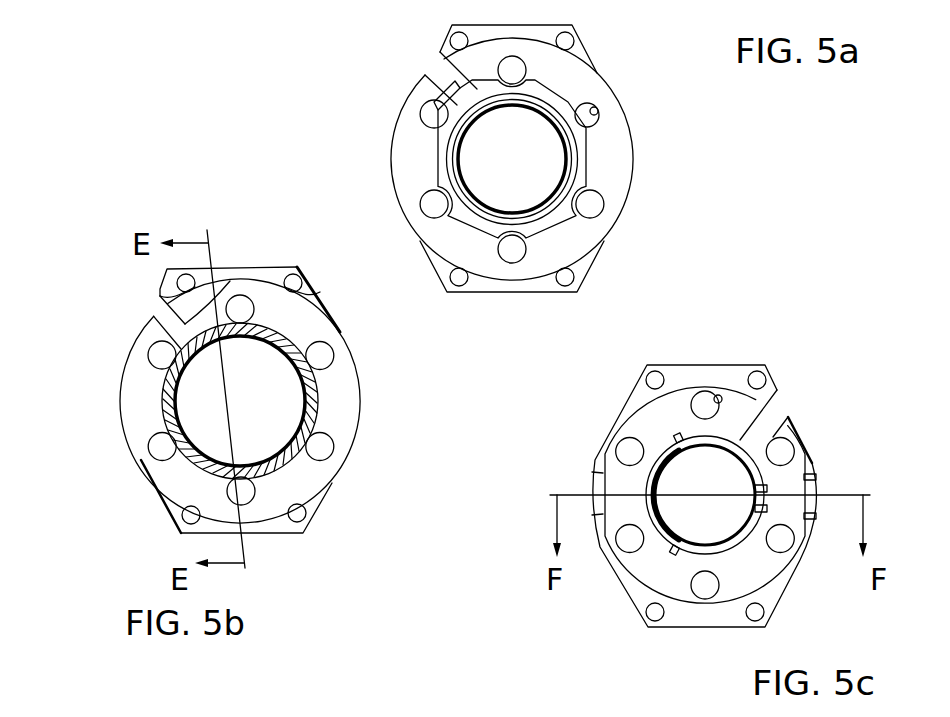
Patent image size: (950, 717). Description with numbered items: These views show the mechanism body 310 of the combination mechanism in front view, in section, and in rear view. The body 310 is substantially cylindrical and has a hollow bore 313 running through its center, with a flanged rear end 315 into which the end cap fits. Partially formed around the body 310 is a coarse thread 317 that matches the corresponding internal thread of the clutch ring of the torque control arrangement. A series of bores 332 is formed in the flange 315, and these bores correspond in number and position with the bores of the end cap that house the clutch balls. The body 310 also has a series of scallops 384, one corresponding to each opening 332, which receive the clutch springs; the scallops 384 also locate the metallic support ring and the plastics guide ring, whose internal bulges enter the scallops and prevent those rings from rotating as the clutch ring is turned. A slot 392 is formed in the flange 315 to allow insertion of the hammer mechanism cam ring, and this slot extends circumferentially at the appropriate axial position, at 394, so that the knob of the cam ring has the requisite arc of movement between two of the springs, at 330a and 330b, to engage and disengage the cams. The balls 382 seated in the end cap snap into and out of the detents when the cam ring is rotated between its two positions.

In FIG. 5A, the body 310 is at (541, 158).
In FIG. 5B, the body 310 is at (226, 360).
In FIG. 5C, the body 310 is at (661, 508).
In FIG. 5B, the hollow bore 313 is at (292, 401).
In FIG. 5B, the flanged rear end 315 is at (271, 400).
In FIG. 5C, the flanged rear end 315 is at (704, 464).
In FIG. 5A, the thread 317 is at (488, 159).
In FIG. 5C, the thread 317 is at (613, 552).
In FIG. 5B, the spring 330a is at (103, 383).
In FIG. 5B, the spring 330b is at (295, 273).
In FIG. 5A, the bore 332 is at (651, 108).
In FIG. 5C, the bore 332 is at (785, 390).
In FIG. 5C, the ball 382 is at (773, 494).
In FIG. 5A, the scallop 384 is at (652, 134).
In FIG. 5A, the slot 392 is at (393, 74).
In FIG. 5B, the slot 392 is at (132, 320).
In FIG. 5C, the slot 392 is at (812, 415).
In FIG. 5B, the circumferential slot extension 394 is at (225, 261).